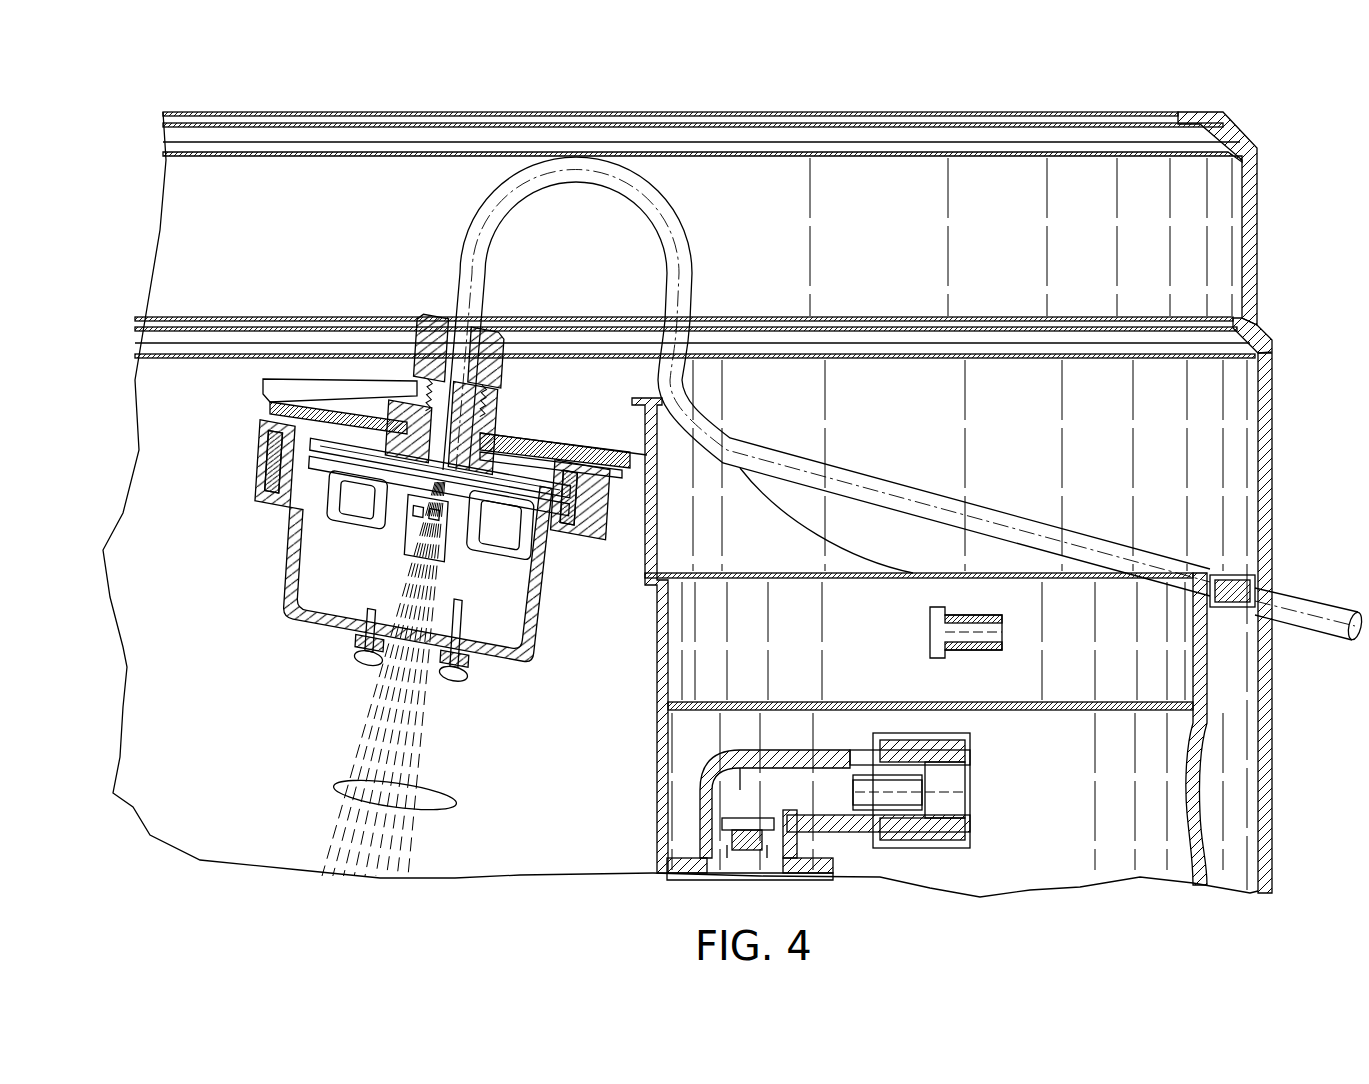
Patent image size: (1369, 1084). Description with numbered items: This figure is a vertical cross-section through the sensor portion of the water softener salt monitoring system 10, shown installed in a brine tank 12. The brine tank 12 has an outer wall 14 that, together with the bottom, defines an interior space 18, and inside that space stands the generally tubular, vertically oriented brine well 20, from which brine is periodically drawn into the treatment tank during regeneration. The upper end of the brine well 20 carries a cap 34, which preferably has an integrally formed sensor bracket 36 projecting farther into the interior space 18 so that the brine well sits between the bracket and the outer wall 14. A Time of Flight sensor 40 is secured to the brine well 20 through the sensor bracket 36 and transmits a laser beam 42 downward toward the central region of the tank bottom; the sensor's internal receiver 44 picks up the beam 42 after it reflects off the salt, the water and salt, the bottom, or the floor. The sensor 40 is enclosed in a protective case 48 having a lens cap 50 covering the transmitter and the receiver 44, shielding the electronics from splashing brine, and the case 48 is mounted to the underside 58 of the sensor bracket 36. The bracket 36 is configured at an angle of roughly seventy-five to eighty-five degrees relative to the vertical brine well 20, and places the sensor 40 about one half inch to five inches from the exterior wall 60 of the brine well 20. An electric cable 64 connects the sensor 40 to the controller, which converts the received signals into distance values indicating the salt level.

The water softener salt monitoring system 10 is at (706, 218).
The brine tank 12 is at (1258, 240).
The outer wall 14 is at (1248, 893).
The interior space 18 is at (1160, 480).
The brine well 20 is at (1178, 823).
The cap 34 is at (913, 673).
The sensor bracket 36 is at (375, 380).
The sensor 40 is at (405, 485).
The beam 42 is at (335, 790).
The receiver 44 is at (392, 567).
The protective case 48 is at (543, 657).
The lens cap 50 is at (445, 652).
The underside 58 is at (278, 399).
The exterior wall 60 is at (655, 791).
The electric cable 64 is at (472, 237).